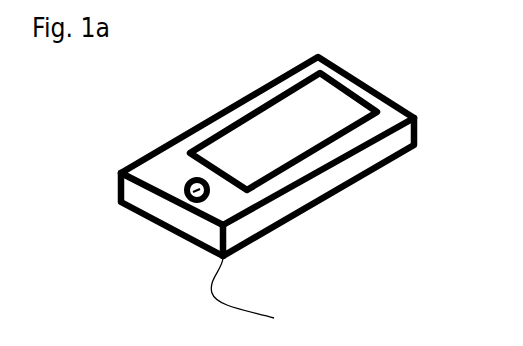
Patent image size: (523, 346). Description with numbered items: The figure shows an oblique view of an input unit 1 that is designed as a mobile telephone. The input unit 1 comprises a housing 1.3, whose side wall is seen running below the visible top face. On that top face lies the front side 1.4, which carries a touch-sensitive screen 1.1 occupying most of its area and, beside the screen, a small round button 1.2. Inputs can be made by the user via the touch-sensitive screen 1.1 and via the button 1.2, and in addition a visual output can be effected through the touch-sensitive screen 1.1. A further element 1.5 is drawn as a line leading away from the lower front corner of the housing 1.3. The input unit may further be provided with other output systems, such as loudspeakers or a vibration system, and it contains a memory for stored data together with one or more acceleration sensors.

The input unit 1 is at (136, 126).
The touch-sensitive screen 1.1 is at (327, 112).
The button 1.2 is at (186, 197).
The housing 1.3 is at (327, 183).
The front side 1.4 is at (270, 190).
The cable 1.5 is at (262, 297).